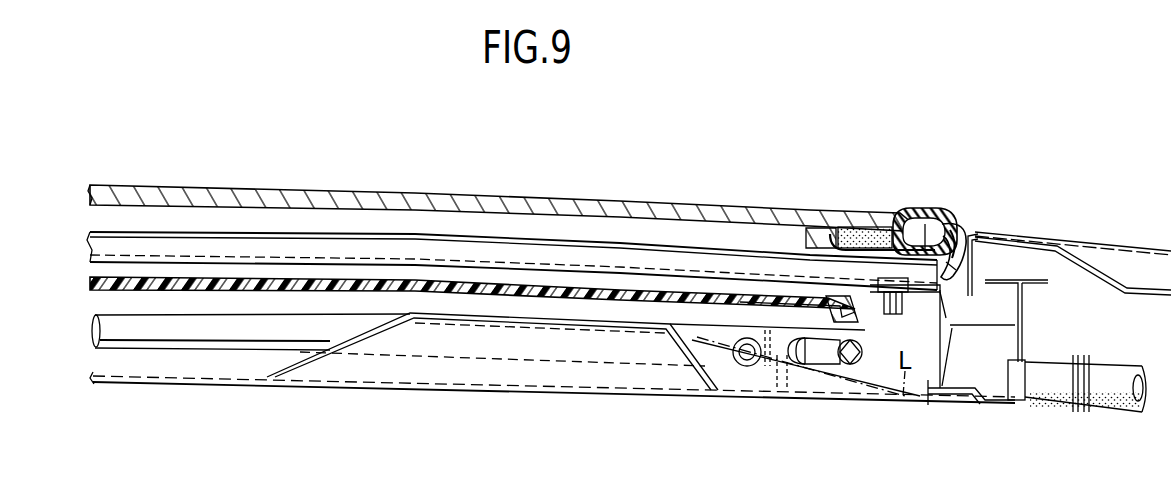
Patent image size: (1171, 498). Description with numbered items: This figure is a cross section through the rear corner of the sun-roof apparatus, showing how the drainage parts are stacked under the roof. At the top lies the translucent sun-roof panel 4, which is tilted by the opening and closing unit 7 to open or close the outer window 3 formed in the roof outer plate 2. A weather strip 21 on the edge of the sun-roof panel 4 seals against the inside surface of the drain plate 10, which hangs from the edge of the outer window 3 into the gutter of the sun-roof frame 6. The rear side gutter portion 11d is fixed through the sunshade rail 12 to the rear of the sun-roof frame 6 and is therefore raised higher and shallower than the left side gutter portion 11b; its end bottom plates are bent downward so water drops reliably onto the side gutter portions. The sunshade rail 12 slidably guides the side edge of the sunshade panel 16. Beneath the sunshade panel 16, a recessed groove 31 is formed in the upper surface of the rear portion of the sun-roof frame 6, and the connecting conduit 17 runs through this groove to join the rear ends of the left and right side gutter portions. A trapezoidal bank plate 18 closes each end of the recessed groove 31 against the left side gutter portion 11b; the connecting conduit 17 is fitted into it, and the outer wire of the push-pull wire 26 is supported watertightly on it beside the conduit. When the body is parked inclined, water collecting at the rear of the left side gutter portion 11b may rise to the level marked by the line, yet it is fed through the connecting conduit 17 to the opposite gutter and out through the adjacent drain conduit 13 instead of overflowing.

The roof outer plate 2 is at (1077, 236).
The outer window 3 is at (960, 236).
The sun-roof panel 4 is at (567, 199).
The sun-roof frame 6 is at (183, 383).
The opening and closing unit 7 is at (137, 340).
The drain plate 10 is at (969, 298).
The left side gutter portion 11b is at (971, 411).
The rear side gutter portion 11d is at (335, 234).
The sunshade rail 12 is at (862, 320).
The drain conduit 13 is at (1112, 406).
The sunshade panel 16 is at (518, 292).
The connecting conduit 17 is at (747, 366).
The bank plate 18 is at (805, 385).
The weather strip 21 is at (912, 212).
The push-pull wire 26 is at (850, 364).
The recessed groove 31 is at (574, 365).